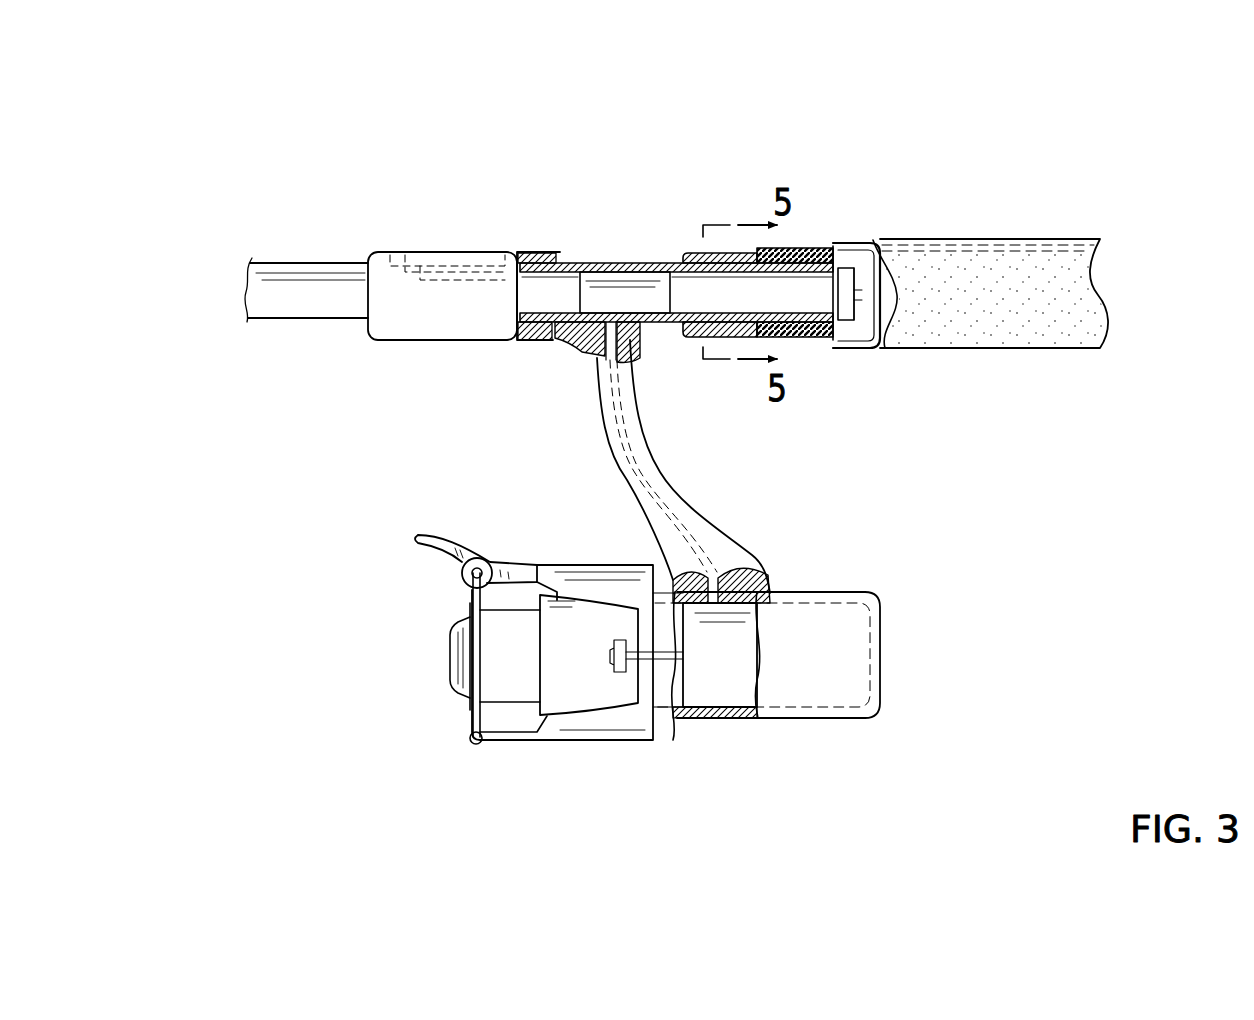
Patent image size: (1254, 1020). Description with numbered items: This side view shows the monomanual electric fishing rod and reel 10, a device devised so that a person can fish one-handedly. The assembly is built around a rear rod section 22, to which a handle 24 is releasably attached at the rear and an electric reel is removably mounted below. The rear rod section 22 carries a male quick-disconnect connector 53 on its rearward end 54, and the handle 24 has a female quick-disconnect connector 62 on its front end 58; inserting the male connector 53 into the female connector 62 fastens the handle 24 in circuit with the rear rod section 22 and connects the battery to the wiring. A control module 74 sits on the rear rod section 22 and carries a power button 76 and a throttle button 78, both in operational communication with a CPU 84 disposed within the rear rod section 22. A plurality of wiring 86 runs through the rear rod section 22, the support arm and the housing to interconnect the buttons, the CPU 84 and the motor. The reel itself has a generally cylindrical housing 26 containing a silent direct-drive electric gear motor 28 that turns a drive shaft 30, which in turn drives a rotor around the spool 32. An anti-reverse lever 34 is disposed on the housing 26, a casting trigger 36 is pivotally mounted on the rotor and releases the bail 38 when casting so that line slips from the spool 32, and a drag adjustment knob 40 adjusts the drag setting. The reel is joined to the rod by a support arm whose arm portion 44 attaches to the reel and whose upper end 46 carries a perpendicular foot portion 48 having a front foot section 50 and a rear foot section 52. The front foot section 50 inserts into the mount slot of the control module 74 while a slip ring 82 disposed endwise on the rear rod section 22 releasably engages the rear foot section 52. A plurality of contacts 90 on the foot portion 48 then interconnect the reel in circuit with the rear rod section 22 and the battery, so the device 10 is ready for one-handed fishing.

The monomanual electric fishing rod and reel 10 is at (959, 136).
The rear rod section 22 is at (275, 268).
The handle 24 is at (1095, 315).
The housing 26 is at (880, 608).
The electric gear motor 28 is at (722, 690).
The drive shaft 30 is at (673, 660).
The spool 32 is at (500, 698).
The anti-reverse lever 34 is at (503, 745).
The casting trigger 36 is at (430, 534).
The bail 38 is at (472, 593).
The drag adjustment knob 40 is at (455, 657).
The arm portion 44 is at (700, 502).
The upper end 46 is at (590, 347).
The foot portion 48 is at (665, 325).
The front foot section 50 is at (515, 330).
The rear foot section 52 is at (702, 340).
The male quick-disconnect connector 53 is at (735, 255).
The rearward end 54 is at (735, 340).
The front end 58 is at (845, 243).
The female quick-disconnect connector 62 is at (815, 252).
The control module 74 is at (383, 330).
The power button 76 is at (400, 258).
The throttle button 78 is at (473, 258).
The slip ring 82 is at (698, 255).
The CPU 84 is at (615, 262).
The plurality of wiring 86 is at (600, 358).
The plurality of contacts 90 is at (560, 262).